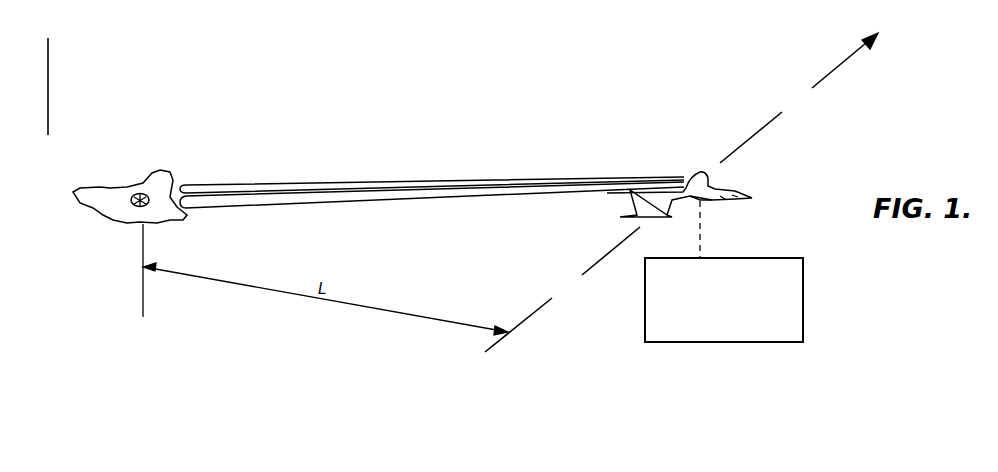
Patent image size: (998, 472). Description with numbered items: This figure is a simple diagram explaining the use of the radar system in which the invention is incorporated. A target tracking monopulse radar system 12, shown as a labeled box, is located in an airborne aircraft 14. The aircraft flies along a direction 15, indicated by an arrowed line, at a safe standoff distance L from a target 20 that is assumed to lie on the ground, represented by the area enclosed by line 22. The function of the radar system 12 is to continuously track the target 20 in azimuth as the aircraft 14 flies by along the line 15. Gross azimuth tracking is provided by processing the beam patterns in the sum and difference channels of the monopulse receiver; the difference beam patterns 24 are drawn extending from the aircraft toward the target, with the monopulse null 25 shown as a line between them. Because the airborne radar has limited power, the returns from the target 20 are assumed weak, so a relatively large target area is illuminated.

The target tracking monopulse radar system 12 is at (807, 240).
The airborne aircraft 14 is at (735, 190).
The direction of flight 15 is at (838, 68).
The target 20 is at (133, 207).
The line enclosing ground area 22 is at (150, 175).
The difference beam patterns 24 is at (290, 188).
The monopulse null 25 is at (198, 197).